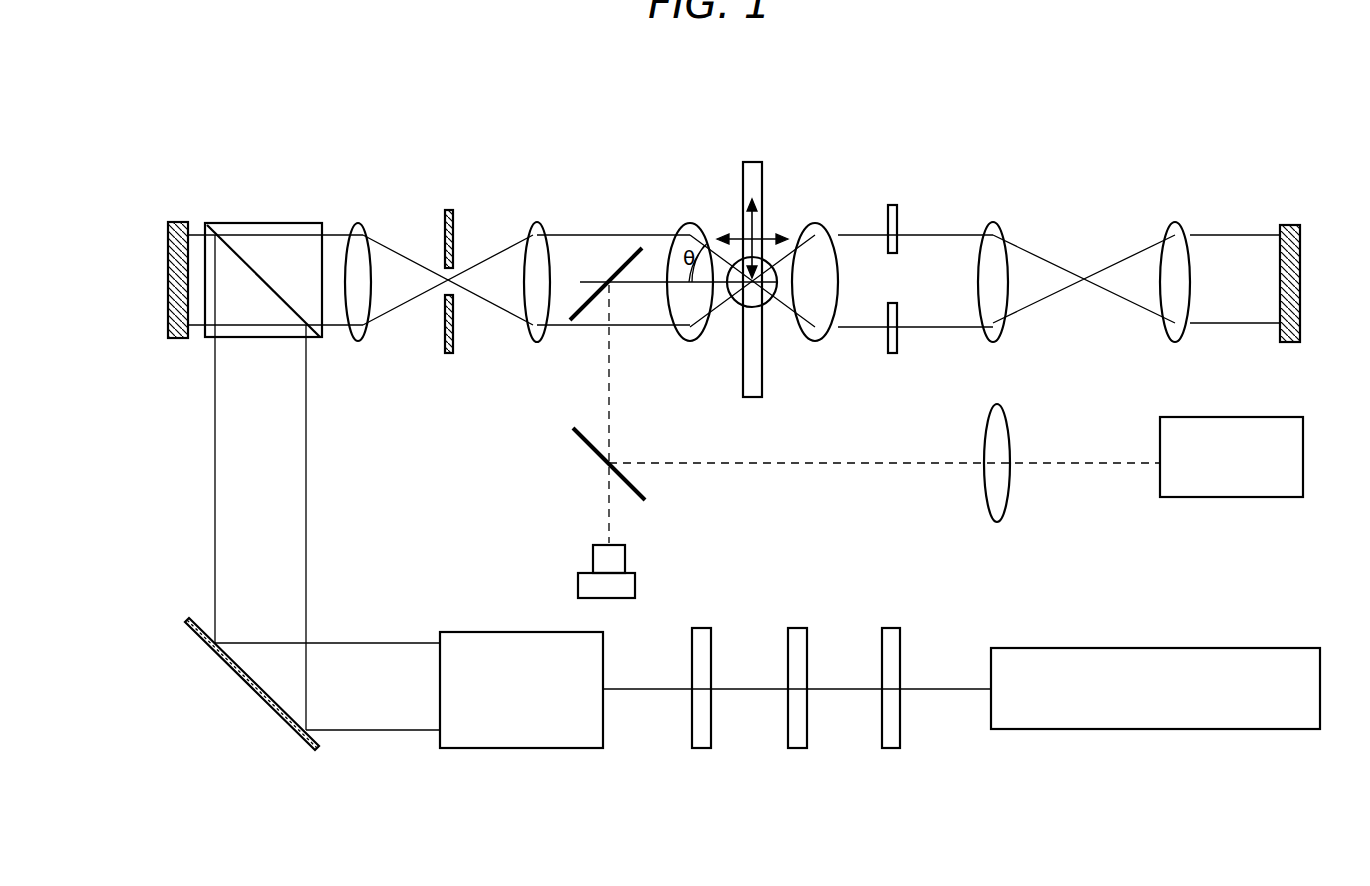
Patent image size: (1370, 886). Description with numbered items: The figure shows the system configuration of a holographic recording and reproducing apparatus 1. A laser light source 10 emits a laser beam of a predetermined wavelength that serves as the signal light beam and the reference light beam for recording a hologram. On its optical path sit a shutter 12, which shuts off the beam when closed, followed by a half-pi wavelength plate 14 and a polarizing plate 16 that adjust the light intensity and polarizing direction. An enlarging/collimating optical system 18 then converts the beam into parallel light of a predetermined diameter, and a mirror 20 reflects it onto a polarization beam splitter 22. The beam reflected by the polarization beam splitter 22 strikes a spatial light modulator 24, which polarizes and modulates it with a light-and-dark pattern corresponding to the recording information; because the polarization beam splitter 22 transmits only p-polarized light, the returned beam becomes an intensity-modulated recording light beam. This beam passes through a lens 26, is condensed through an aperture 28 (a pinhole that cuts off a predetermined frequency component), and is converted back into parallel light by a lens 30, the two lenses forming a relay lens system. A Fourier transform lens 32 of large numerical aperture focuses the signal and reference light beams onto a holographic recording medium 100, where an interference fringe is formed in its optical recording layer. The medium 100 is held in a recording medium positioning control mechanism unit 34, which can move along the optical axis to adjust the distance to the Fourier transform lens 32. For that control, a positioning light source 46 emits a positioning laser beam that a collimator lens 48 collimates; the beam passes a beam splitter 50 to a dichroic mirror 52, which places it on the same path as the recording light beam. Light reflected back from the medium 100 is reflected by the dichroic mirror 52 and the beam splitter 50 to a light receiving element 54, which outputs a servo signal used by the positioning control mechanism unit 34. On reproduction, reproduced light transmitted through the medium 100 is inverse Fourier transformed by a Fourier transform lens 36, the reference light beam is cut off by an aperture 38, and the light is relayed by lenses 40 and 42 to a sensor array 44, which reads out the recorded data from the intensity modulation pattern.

The holographic recording and reproducing apparatus 1 is at (626, 798).
The laser light source 10 is at (1152, 729).
The shutter 12 is at (888, 748).
The π/2 wavelength plate 14 is at (795, 748).
The polarizing plate 16 is at (700, 748).
The enlarging/collimating optical system 18 is at (520, 748).
The mirror 20 is at (247, 688).
The polarization beam splitter 22 is at (264, 222).
The spatial light modulator 24 is at (180, 220).
The lens 26 is at (358, 222).
The aperture 28 is at (448, 208).
The lens 30 is at (537, 222).
The Fourier transform lens 32 is at (690, 222).
The recording medium positioning control mechanism unit 34 is at (738, 308).
The Fourier transform lens 36 is at (815, 222).
The aperture 38 is at (892, 204).
The lens 40 is at (993, 221).
The lens 42 is at (1175, 221).
The sensor array 44 is at (1290, 224).
The positioning light source 46 is at (1232, 497).
The collimator lens 48 is at (997, 523).
The beam splitter 50 is at (588, 452).
The dichroic mirror 52 is at (628, 245).
The light receiving element 54 is at (636, 576).
The holographic recording medium 100 is at (752, 160).